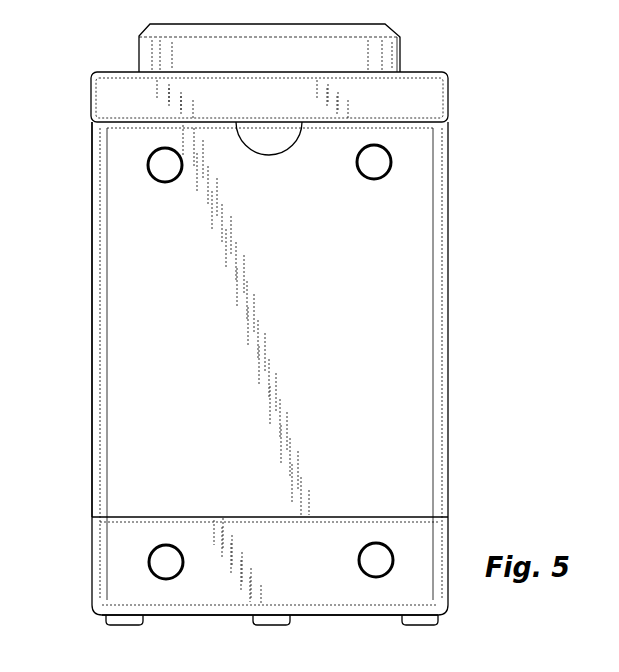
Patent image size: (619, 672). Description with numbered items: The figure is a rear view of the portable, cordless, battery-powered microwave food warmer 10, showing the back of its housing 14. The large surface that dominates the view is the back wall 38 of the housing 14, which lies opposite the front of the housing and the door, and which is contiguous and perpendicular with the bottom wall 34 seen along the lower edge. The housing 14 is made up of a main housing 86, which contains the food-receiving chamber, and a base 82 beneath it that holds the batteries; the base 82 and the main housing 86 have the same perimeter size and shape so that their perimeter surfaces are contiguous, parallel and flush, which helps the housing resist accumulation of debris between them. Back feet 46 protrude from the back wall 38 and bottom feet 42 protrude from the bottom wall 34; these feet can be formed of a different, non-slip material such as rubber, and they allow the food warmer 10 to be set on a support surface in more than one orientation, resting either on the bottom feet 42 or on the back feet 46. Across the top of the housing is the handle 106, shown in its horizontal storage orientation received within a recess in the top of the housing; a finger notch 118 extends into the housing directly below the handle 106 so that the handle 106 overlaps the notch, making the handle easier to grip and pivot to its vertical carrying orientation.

The microwave food warmer 10 is at (493, 411).
The housing 14 is at (88, 205).
The bottom wall 34 is at (193, 617).
The back wall 38 is at (385, 292).
The bottom feet 42 is at (260, 618).
The back feet 46 is at (382, 161).
The base 82 is at (93, 556).
The main housing 86 is at (88, 337).
The handle 106 is at (412, 82).
The finger notch 118 is at (263, 142).